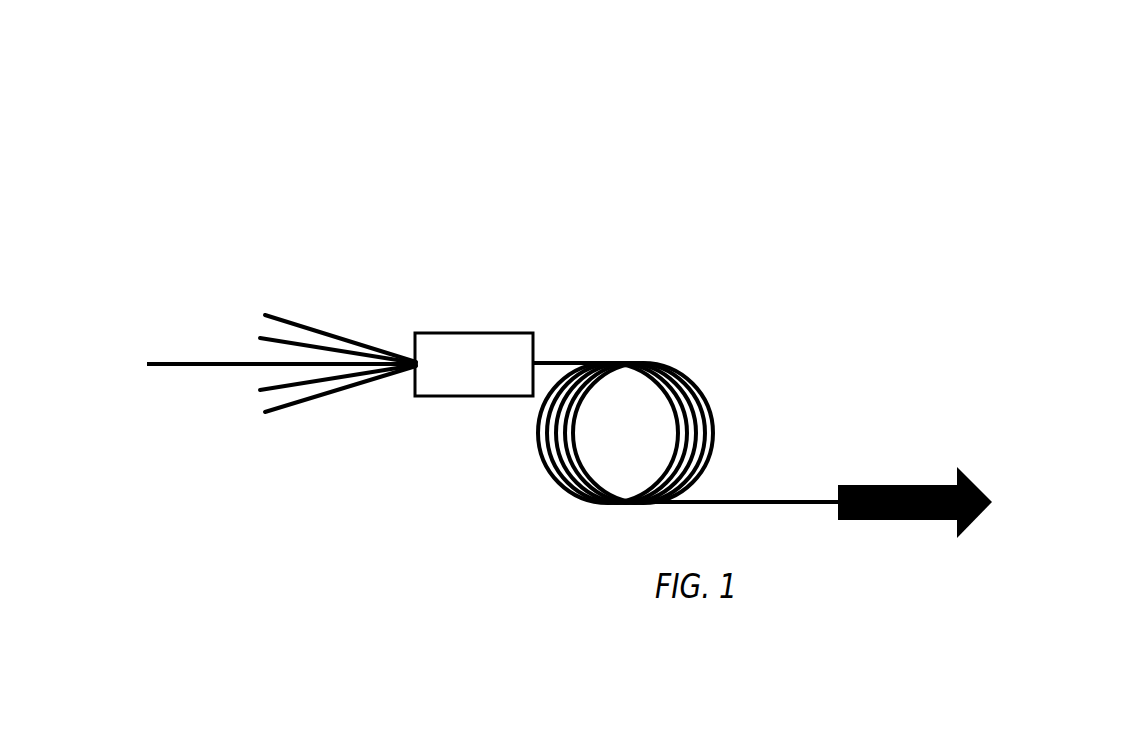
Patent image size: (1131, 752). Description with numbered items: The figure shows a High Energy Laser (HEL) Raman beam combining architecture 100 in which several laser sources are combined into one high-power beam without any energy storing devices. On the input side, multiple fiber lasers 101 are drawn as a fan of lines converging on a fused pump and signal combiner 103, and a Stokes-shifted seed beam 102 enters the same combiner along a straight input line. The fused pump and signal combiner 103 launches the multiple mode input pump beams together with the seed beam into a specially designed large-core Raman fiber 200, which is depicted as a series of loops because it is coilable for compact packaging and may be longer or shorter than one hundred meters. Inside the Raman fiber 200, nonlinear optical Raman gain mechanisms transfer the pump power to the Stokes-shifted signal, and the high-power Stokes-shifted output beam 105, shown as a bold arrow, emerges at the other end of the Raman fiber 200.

The HEL Raman beam combining architecture 100 is at (379, 135).
The fiber lasers 101 is at (255, 311).
The Stokes-shifted seed beam 102 is at (221, 386).
The fused pump and signal combiner 103 is at (538, 321).
The Raman fiber 200 is at (728, 415).
The Stokes-shifted output beam 105 is at (1024, 507).